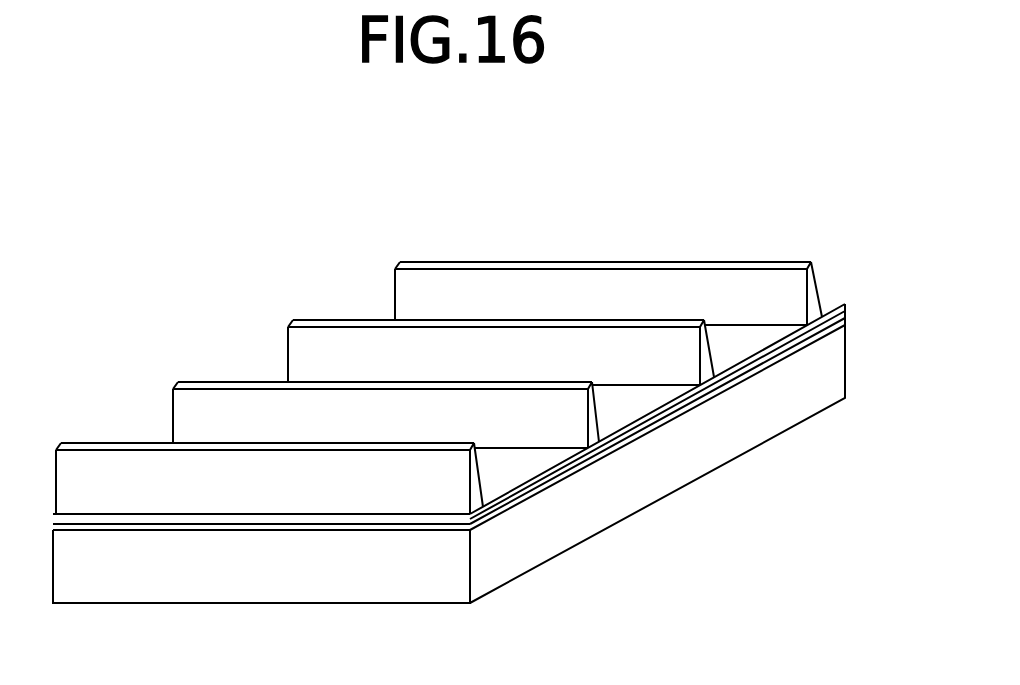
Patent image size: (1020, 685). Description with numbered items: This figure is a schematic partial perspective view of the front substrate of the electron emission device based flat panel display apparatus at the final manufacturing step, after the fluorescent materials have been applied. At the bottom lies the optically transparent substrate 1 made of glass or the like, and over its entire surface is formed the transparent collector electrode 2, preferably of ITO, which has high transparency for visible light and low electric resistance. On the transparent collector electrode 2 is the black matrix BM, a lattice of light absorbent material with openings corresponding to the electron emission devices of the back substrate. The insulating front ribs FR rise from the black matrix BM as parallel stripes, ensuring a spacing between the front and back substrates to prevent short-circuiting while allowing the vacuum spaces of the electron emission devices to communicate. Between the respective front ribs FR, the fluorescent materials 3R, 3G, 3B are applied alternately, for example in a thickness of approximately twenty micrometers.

The transparent substrate 1 is at (837, 373).
The transparent collector electrode 2 is at (845, 327).
The black matrix BM is at (826, 327).
The fluorescent material 3B is at (510, 462).
The fluorescent material 3G is at (628, 402).
The fluorescent material 3R is at (740, 342).
The front rib FR is at (808, 262).